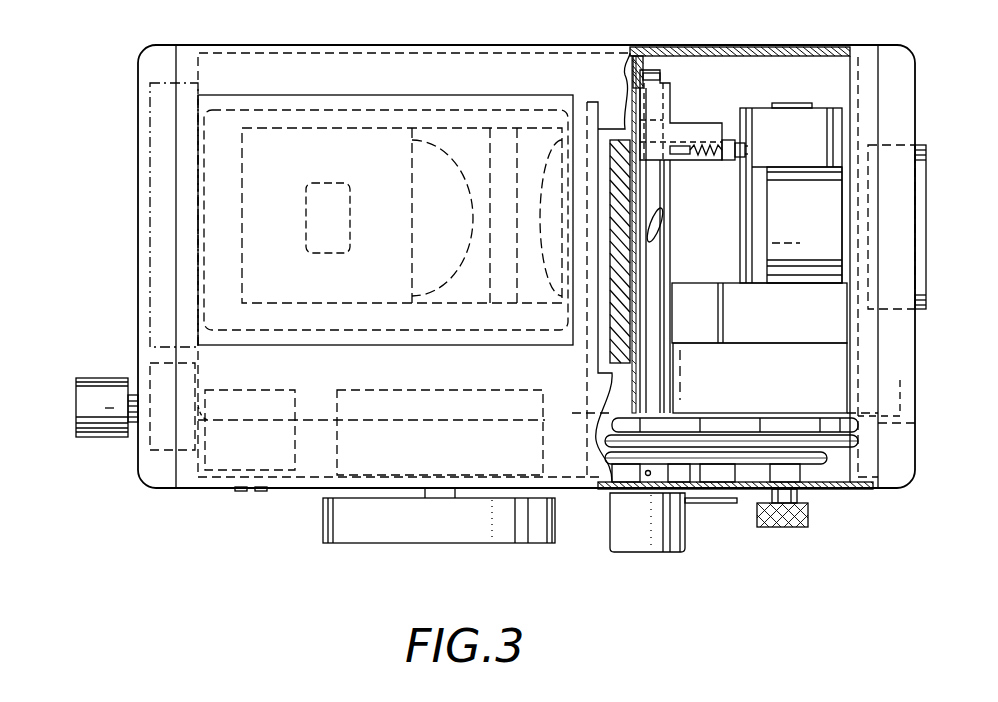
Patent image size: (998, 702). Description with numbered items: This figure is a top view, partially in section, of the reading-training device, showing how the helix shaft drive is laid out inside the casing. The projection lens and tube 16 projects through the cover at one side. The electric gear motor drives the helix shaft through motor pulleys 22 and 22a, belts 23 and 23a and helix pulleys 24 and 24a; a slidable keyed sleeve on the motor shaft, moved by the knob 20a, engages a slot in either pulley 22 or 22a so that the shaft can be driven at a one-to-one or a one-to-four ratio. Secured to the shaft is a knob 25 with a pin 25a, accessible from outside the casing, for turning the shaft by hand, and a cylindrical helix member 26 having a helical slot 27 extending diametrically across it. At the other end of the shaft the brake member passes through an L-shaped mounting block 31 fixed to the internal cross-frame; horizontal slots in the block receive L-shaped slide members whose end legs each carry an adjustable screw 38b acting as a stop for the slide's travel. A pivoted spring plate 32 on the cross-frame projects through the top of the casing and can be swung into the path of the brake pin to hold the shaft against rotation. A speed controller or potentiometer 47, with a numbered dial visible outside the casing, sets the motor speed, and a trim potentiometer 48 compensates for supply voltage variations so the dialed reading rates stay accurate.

The lens and tube 16 is at (918, 197).
The knob 20a is at (783, 528).
The motor pulley 22 is at (812, 492).
The motor pulley 22a is at (805, 430).
The belt 23 is at (704, 462).
The belt 23a is at (693, 440).
The helix pulley 24 is at (617, 478).
The helix pulley 24a is at (605, 428).
The knob 25 is at (645, 540).
The pin 25a is at (736, 505).
The cylindrical helix member 26 is at (661, 272).
The helical slot 27 is at (661, 222).
The L-shaped mounting block 31 is at (681, 128).
The pivoted spring plate 32 is at (645, 66).
The screw 38b is at (749, 148).
The potentiometer or speed controller 47 is at (423, 543).
The trim potentiometer 48 is at (222, 455).